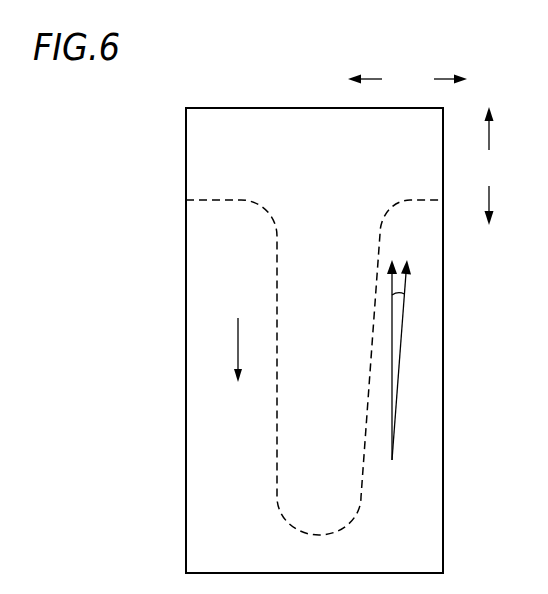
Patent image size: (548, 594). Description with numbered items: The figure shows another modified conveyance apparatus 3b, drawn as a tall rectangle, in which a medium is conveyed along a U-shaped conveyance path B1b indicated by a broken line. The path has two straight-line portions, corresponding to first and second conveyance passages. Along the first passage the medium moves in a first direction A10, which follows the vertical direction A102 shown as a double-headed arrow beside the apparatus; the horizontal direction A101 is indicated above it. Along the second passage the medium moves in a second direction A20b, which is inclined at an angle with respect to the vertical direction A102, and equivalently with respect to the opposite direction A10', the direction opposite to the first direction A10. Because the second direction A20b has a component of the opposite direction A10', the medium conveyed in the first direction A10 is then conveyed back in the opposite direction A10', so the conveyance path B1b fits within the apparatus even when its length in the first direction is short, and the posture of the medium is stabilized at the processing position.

The conveyance apparatus 3b is at (314, 340).
The conveyance path B1b is at (210, 200).
The first direction A10 is at (238, 334).
The opposite direction A10' is at (352, 360).
The second direction A20b is at (398, 384).
The horizontal direction A101 is at (407, 81).
The vertical direction A102 is at (489, 166).